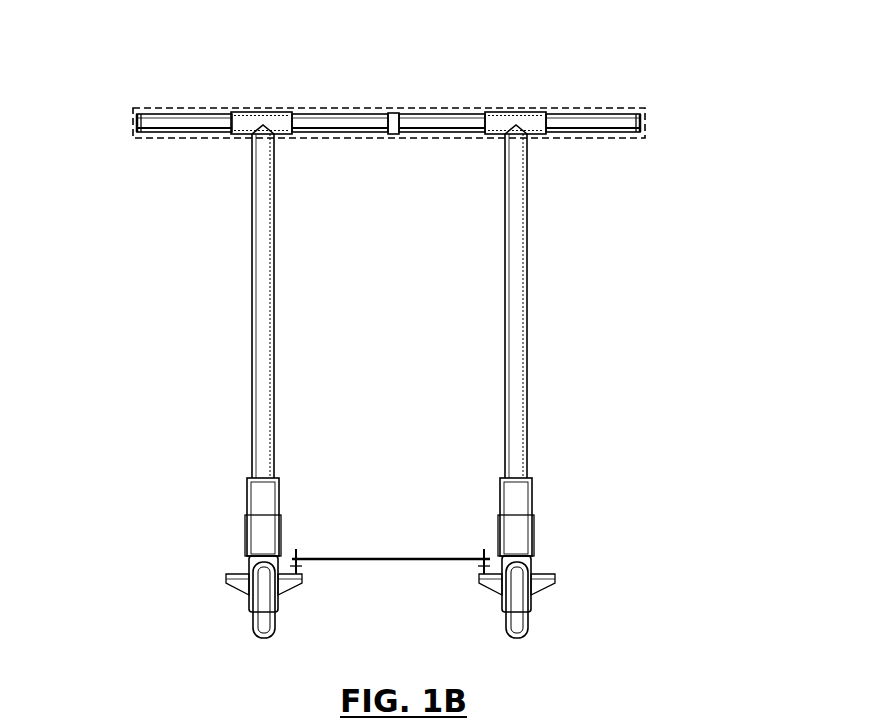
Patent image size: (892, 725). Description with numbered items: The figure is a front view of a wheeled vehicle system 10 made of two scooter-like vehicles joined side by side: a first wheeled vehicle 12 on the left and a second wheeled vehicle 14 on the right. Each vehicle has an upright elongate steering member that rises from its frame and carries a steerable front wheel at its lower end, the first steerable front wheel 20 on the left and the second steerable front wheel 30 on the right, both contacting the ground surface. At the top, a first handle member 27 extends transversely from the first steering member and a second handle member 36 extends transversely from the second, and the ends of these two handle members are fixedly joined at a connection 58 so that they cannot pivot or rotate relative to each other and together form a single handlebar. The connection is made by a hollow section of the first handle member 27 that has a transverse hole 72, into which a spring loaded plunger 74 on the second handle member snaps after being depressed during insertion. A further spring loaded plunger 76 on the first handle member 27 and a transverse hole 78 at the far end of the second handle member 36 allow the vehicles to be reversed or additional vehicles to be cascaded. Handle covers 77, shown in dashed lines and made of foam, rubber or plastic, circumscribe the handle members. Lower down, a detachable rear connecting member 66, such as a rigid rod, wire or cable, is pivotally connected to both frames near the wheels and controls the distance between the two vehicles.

The wheeled vehicle system 10 is at (728, 103).
The first wheeled vehicle 12 is at (130, 282).
The second wheeled vehicle 14 is at (623, 292).
The first steerable front wheel 20 is at (250, 623).
The second steerable front wheel 30 is at (530, 624).
The first handle member 27 is at (170, 140).
The second handle member 36 is at (590, 135).
The connection 58 is at (398, 84).
The detachable rear connecting member 66 is at (378, 557).
The transverse hole 72 is at (393, 138).
The spring loaded plunger 74 is at (388, 113).
The spring loaded plunger 76 is at (148, 113).
The handle covers 77 is at (192, 108).
The transverse hole 78 is at (630, 112).